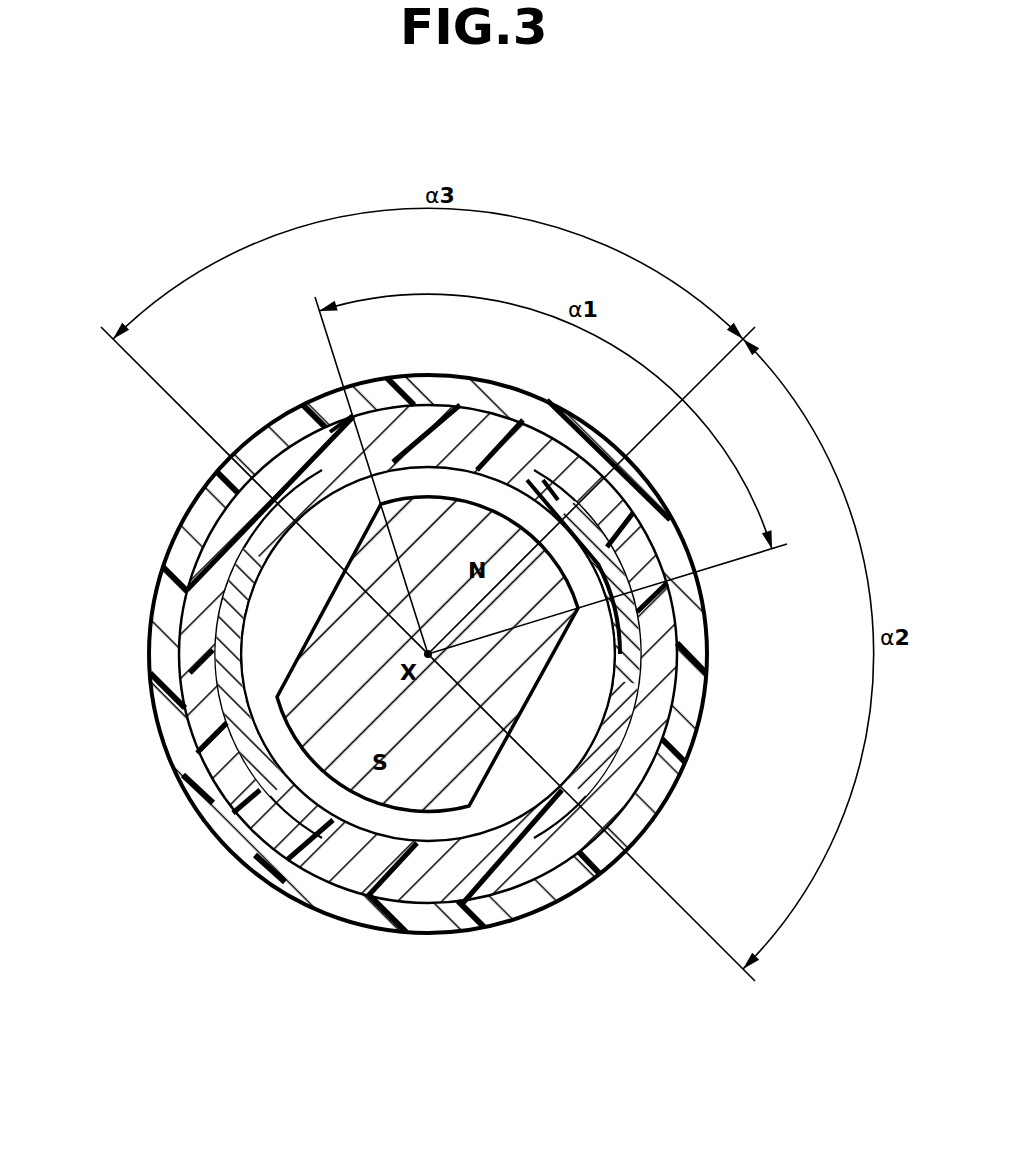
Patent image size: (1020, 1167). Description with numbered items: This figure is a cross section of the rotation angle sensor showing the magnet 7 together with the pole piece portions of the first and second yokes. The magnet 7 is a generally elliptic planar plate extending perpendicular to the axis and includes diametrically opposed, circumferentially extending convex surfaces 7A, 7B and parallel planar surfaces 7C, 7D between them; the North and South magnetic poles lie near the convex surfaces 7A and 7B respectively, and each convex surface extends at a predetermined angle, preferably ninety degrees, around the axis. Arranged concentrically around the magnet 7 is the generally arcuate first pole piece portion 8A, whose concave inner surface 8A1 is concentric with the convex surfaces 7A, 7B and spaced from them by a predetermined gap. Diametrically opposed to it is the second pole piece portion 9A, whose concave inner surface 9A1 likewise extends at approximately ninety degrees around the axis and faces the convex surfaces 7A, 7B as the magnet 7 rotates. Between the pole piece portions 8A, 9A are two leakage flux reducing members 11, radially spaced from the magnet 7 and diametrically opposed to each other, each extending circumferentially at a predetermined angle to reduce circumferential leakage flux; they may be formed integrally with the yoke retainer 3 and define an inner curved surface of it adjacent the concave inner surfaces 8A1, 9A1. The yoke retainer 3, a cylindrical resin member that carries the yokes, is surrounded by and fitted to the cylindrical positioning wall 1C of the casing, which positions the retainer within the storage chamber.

The positioning wall 1C is at (203, 497).
The yoke retainer 3 is at (293, 843).
The magnet 7 is at (220, 800).
The convex surface 7A is at (447, 498).
The convex surface 7B is at (358, 833).
The planar surface 7C is at (483, 783).
The planar surface 7D is at (357, 527).
The first pole piece portion 8A is at (627, 688).
The concave inner surface 8A1 is at (655, 768).
The second pole piece portion 9A is at (222, 643).
The concave inner surface 9A1 is at (232, 563).
The leakage flux reducing member 11 is at (512, 460).